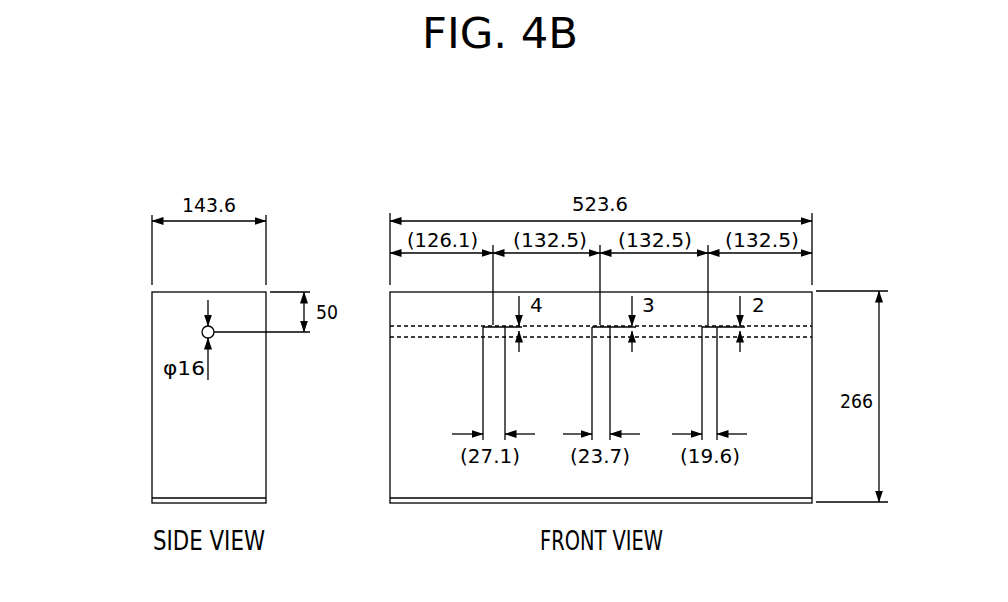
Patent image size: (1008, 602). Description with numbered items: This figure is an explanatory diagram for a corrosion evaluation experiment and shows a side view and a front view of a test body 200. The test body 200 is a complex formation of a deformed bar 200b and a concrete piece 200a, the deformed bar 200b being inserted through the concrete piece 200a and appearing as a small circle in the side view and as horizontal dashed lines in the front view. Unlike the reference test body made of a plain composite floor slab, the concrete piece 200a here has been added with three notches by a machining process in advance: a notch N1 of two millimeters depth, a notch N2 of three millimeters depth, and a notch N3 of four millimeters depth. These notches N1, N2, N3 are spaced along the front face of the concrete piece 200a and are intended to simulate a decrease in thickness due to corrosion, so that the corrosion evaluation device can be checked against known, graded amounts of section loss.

The test body 200 is at (374, 244).
The concrete piece 200a is at (151, 388).
The deformed bar 200b is at (212, 338).
The notch N1 is at (714, 333).
The notch N2 is at (606, 333).
The notch N3 is at (496, 333).